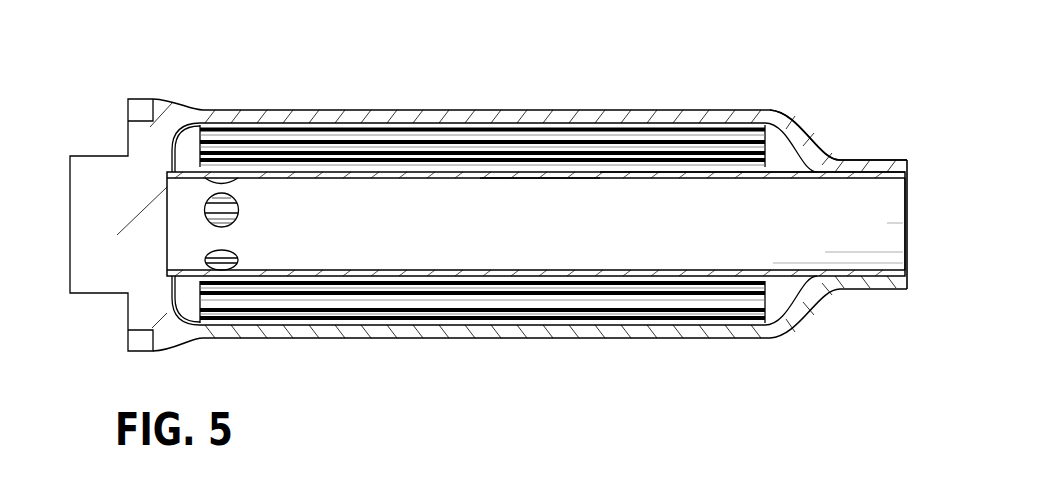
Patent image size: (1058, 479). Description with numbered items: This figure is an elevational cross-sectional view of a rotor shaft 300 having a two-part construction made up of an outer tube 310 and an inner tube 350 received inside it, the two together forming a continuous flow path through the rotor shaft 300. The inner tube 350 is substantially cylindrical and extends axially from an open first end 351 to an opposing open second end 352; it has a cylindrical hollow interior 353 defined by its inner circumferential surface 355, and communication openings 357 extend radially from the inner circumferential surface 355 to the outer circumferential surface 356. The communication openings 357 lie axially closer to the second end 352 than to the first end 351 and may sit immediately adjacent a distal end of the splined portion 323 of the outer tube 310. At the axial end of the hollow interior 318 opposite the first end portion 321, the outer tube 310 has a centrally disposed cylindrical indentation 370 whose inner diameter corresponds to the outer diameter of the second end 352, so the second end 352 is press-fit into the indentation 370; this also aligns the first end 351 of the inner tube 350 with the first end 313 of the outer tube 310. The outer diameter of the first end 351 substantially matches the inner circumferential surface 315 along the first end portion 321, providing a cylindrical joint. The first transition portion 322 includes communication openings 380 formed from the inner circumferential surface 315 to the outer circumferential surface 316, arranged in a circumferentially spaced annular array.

The rotor shaft 300 is at (268, 54).
The outer tube 310 is at (567, 99).
The first end of the outer tube 313 is at (907, 167).
The inner circumferential surface of the outer tube 315 is at (860, 174).
The outer circumferential surface of the outer tube 316 is at (895, 158).
The hollow interior of the outer tube 318 is at (197, 295).
The first end portion of the outer tube 321 is at (860, 131).
The first transition portion 322 is at (807, 339).
The splined portion of the outer tube 323 is at (458, 100).
The inner tube 350 is at (781, 162).
The first end of the inner tube 351 is at (907, 215).
The second end of the inner tube 352 is at (167, 275).
The hollow interior of the inner tube 353 is at (451, 240).
The inner circumferential surface of the inner tube 355 is at (538, 180).
The outer circumferential surface of the inner tube 356 is at (665, 178).
The communication openings of the inner tube 357 is at (232, 252).
The indentation 370 is at (167, 203).
The communication openings of the first transition portion 380 is at (803, 165).